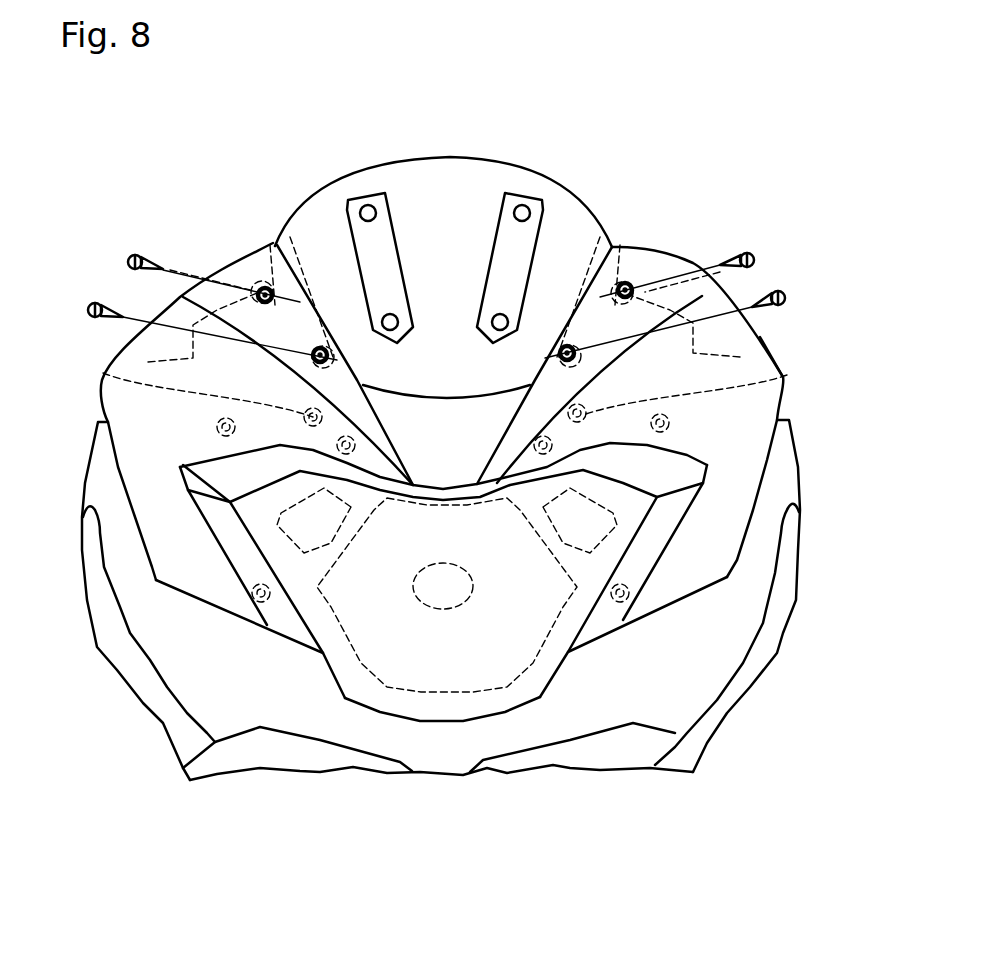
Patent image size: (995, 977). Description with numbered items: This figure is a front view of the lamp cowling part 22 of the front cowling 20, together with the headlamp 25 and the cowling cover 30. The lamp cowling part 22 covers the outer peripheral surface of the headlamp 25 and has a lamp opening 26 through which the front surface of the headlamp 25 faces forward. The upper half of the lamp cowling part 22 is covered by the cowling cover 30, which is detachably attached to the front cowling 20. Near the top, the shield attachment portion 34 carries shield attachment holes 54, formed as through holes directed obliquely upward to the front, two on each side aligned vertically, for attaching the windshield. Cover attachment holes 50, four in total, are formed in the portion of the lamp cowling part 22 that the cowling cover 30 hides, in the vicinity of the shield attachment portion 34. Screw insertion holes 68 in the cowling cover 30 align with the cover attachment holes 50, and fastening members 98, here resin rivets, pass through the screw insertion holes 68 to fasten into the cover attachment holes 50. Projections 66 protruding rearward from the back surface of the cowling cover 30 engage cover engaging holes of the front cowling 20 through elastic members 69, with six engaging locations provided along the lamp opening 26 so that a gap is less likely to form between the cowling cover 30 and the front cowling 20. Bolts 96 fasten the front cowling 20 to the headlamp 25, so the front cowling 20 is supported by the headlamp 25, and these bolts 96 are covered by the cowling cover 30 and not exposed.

The front cowling 20 is at (796, 446).
The lamp cowling part 22 is at (757, 575).
The headlamp 25 is at (428, 707).
The lamp opening 26 is at (344, 682).
The cowling cover 30 is at (784, 377).
The shield attachment portion 34 is at (442, 177).
The cover attachment holes 50 is at (273, 243).
The shield attachment holes 54 is at (390, 313).
The projections 66 is at (218, 428).
The screw insertion holes 68 is at (260, 289).
The elastic members 69 is at (217, 427).
The bolts 96 is at (135, 362).
The fastening members 98 is at (92, 304).